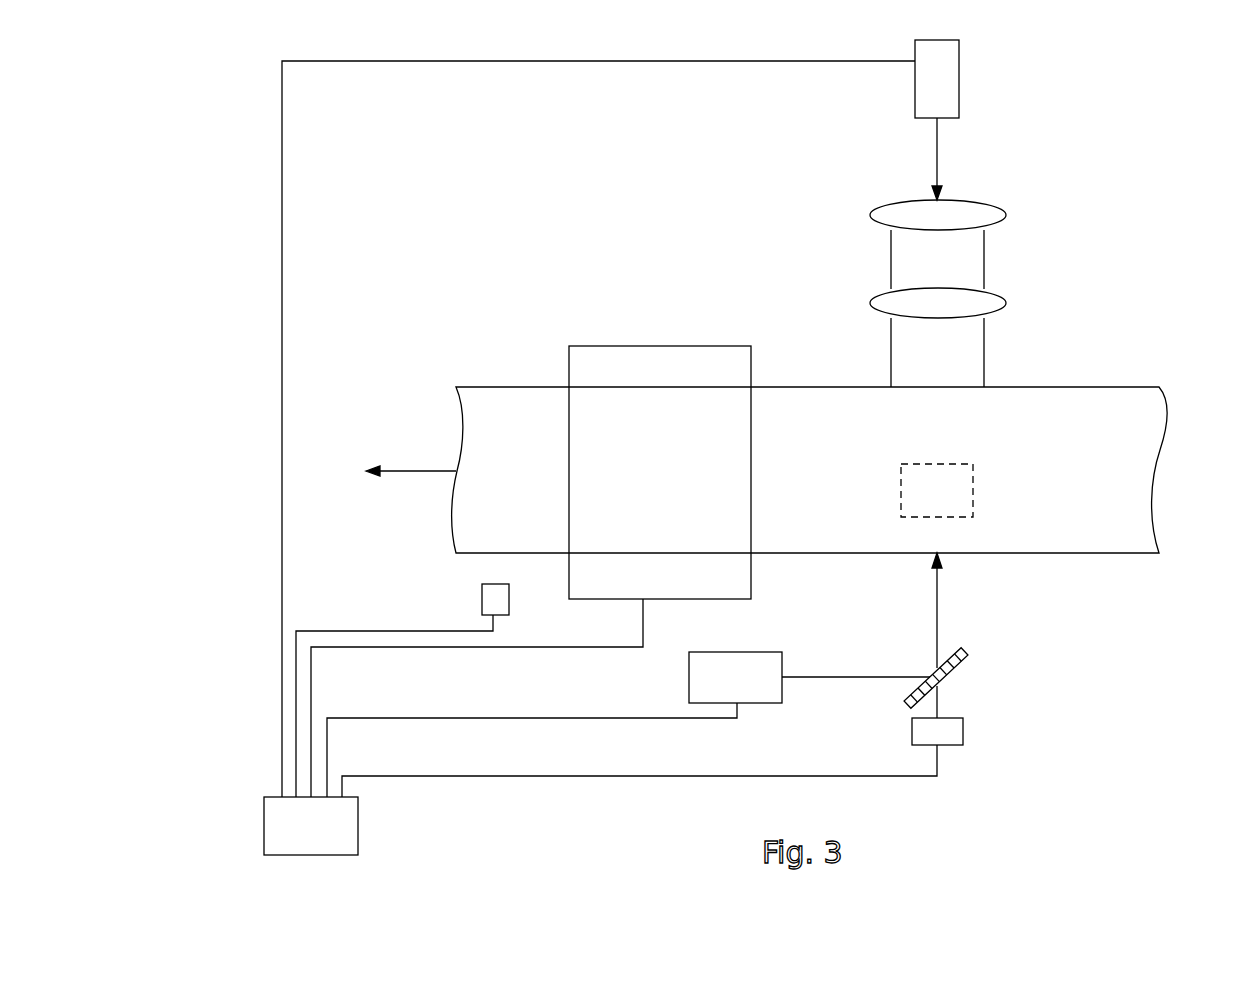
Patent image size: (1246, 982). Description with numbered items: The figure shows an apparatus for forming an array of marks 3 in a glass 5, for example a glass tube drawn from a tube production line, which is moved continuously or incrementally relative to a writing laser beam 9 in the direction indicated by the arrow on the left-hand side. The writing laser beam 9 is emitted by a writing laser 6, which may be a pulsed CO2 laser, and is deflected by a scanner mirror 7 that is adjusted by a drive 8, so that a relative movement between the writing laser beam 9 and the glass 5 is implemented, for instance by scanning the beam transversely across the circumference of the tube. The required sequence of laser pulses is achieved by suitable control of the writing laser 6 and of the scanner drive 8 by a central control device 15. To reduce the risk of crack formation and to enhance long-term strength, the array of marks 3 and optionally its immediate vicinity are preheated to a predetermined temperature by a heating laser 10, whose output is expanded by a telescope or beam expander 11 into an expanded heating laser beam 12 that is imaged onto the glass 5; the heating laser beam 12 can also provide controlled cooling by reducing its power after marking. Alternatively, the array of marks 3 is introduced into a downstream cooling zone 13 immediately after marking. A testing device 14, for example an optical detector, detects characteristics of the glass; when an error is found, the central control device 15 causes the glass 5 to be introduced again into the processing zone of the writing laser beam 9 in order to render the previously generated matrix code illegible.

The array of marks 3 is at (973, 483).
The glass 5 is at (1155, 412).
The writing laser 6 is at (775, 665).
The scanner mirror 7 is at (953, 673).
The drive 8 is at (957, 732).
The writing laser beam 9 is at (937, 608).
The heating laser 10 is at (950, 80).
The beam expander 11 is at (1002, 258).
The heating laser beam 12 is at (970, 352).
The cooling zone 13 is at (668, 353).
The testing device 14 is at (490, 600).
The central control device 15 is at (347, 828).